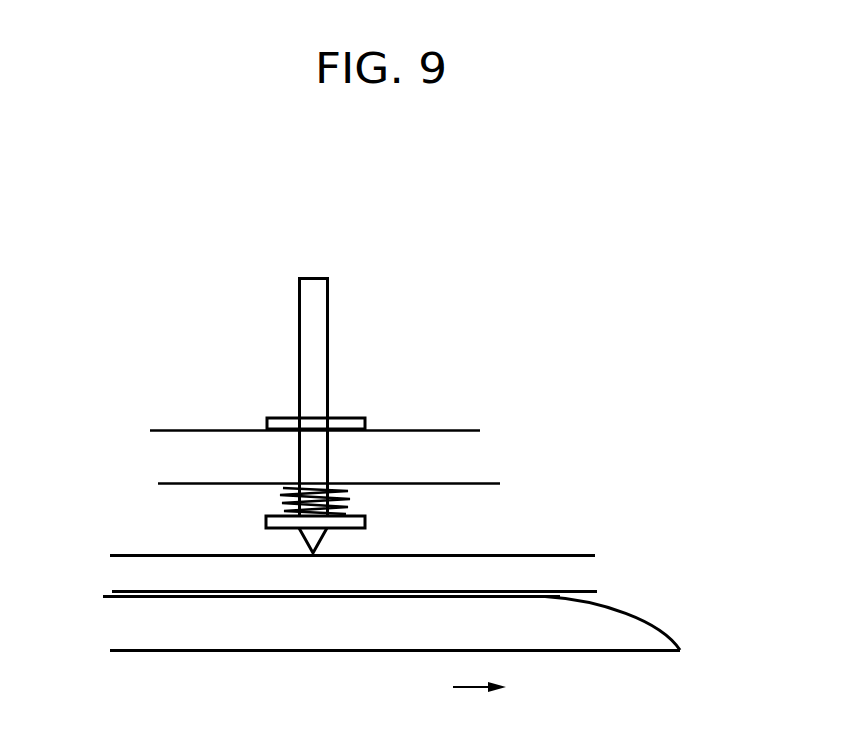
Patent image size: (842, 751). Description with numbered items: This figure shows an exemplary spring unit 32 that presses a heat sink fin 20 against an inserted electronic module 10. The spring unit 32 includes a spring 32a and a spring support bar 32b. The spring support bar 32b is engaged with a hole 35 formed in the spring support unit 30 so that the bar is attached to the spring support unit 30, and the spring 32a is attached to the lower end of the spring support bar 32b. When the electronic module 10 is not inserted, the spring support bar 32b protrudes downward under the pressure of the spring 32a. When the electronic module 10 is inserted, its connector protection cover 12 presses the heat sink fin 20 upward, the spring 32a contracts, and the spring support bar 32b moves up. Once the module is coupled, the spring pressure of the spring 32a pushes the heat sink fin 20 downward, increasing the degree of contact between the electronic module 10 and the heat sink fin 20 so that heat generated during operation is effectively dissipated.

The spring unit 32 is at (333, 232).
The spring 32a is at (345, 505).
The spring support bar 32b is at (293, 340).
The hole 35 is at (333, 463).
The spring support unit 30 is at (467, 431).
The heat sink fin 20 is at (140, 556).
The connector protection cover 12 is at (665, 624).
The electronic module 10 is at (256, 652).